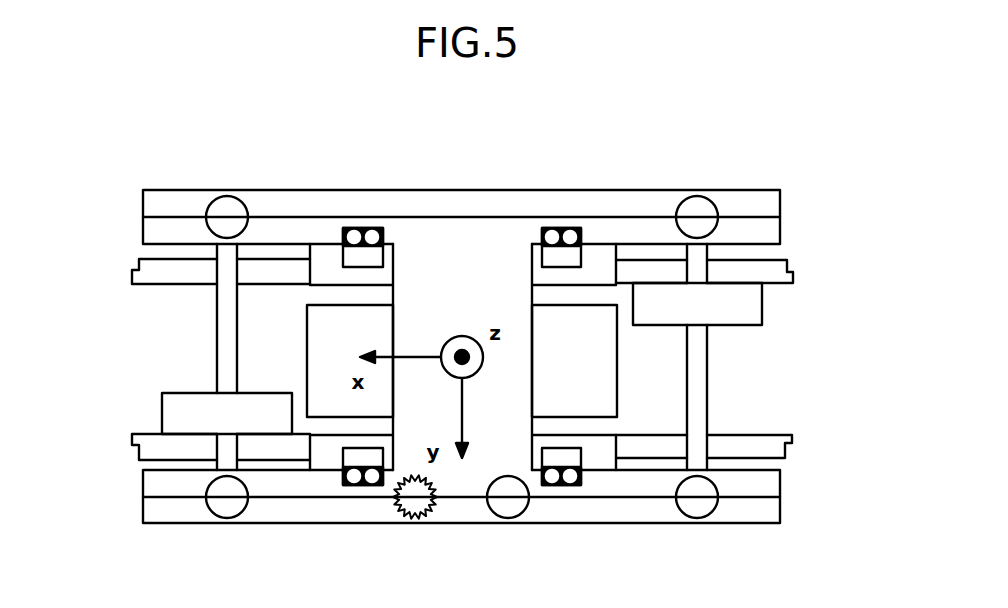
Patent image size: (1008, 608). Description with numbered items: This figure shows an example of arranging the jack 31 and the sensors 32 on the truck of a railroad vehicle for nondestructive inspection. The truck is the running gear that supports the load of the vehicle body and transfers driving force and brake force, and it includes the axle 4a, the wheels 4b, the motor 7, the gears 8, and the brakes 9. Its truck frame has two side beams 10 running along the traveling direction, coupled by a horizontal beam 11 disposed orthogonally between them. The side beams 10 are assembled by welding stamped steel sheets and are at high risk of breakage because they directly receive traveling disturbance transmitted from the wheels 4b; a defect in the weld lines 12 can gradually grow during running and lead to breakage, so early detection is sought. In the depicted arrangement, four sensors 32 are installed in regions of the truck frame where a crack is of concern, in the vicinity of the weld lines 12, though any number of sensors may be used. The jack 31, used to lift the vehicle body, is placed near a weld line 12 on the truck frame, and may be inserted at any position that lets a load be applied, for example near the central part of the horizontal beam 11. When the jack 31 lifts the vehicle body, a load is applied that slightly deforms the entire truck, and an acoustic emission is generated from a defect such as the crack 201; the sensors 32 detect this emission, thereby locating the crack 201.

The axle 4a is at (217, 370).
The wheels 4b is at (138, 265).
The motor 7 is at (307, 322).
The gears 8 is at (162, 408).
The brakes 9 is at (340, 285).
The side beams 10 is at (751, 206).
The horizontal beam 11 is at (487, 438).
The weld lines 12 is at (757, 220).
The jack 31 is at (527, 507).
The sensors 32 is at (227, 196).
The crack 201 is at (408, 520).